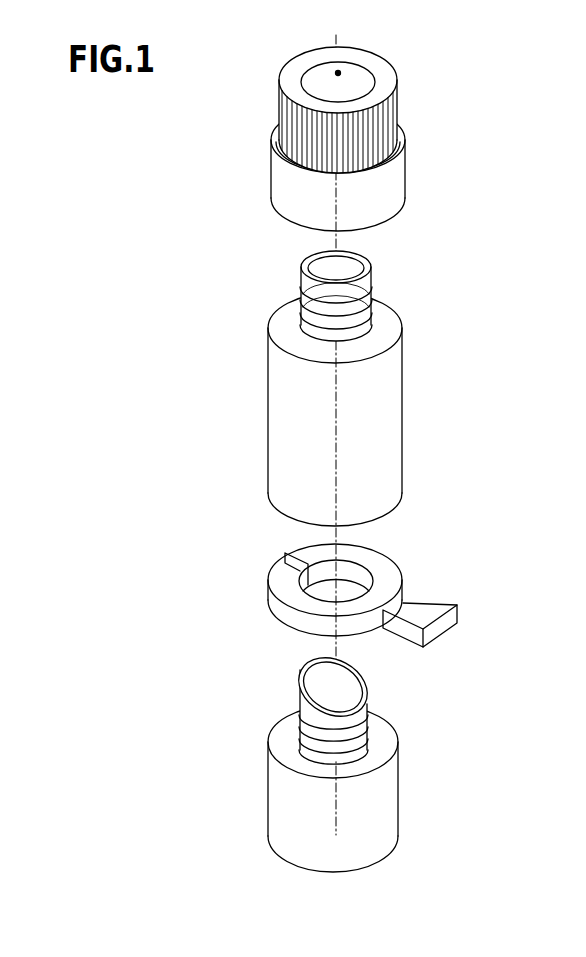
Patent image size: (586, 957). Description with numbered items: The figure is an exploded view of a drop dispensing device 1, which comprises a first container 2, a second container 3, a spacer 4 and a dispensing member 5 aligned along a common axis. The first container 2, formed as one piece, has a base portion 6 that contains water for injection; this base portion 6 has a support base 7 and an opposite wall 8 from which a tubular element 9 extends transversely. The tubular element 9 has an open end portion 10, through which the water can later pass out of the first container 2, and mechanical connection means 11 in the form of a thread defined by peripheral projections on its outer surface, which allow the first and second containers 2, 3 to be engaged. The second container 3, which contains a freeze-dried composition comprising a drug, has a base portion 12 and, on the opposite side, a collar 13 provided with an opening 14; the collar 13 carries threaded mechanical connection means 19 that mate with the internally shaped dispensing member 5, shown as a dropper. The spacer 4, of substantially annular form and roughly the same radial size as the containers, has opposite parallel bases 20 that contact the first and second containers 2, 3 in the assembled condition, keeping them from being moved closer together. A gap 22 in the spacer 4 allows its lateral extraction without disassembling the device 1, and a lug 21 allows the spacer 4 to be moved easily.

The drop dispensing device 1 is at (500, 105).
The first container 2 is at (305, 770).
The second container 3 is at (331, 372).
The spacer 4 is at (345, 571).
The dispensing member 5 is at (290, 180).
The base portion 6 is at (292, 800).
The support base 7 is at (360, 870).
The opposite wall 8 is at (335, 710).
The tubular element 9 is at (289, 722).
The open end portion 10 is at (361, 688).
The mechanical connection means 11 is at (283, 745).
The base portion 12 is at (250, 413).
The collar 13 is at (305, 316).
The opening 14 is at (368, 272).
The mechanical connection means 19 is at (353, 279).
The bases 20 is at (280, 622).
The lug 21 is at (440, 605).
The gap 22 is at (297, 551).